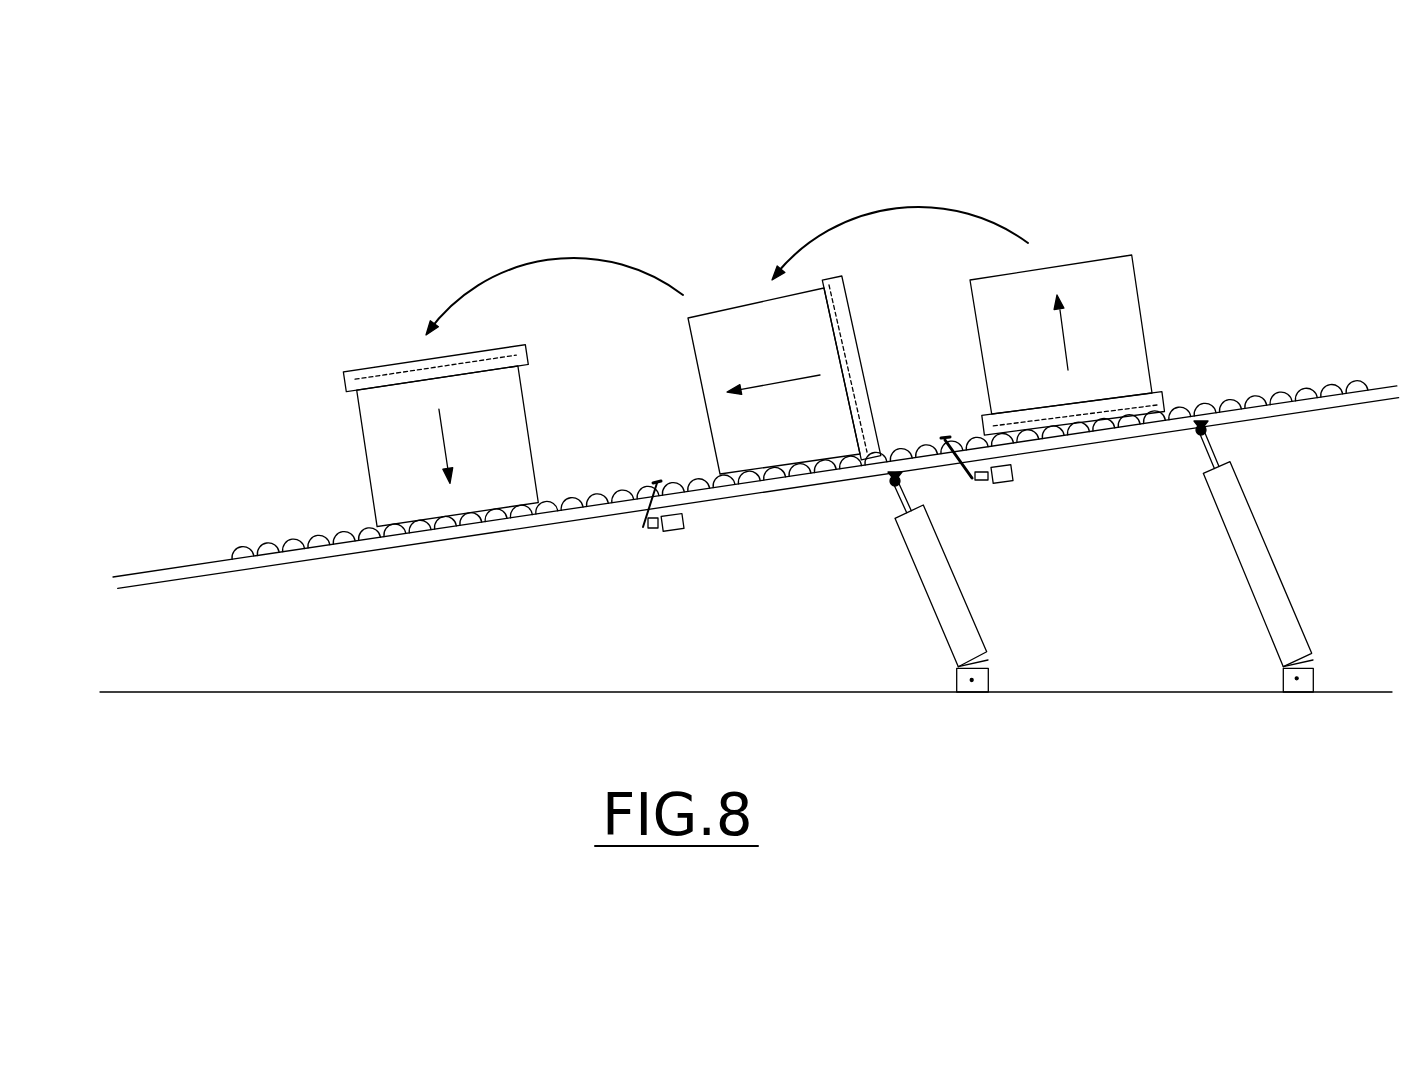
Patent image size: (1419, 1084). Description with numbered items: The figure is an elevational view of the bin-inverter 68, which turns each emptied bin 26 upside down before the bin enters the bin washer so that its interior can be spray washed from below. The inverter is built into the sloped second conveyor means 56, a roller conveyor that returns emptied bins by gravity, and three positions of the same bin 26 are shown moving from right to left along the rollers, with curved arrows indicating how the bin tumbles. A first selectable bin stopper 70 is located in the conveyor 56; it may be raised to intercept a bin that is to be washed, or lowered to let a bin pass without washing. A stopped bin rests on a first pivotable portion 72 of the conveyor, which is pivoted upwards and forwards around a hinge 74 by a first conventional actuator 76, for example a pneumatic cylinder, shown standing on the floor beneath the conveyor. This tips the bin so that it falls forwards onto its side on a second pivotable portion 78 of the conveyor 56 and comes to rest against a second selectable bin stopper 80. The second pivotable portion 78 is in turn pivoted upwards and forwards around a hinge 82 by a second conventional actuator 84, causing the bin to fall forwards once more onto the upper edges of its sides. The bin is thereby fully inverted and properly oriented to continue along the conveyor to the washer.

The bin-inverter 68 is at (1001, 103).
The bin 26 is at (524, 393).
The second conveyor means 56 is at (1377, 383).
The hinge 74 is at (917, 456).
The first selectable bin stopper 70 is at (957, 413).
The second selectable bin stopper 80 is at (657, 482).
The hinge 82 is at (597, 513).
The second pivotable portion 78 is at (824, 482).
The first pivotable portion 72 is at (1120, 438).
The second conventional actuator 84 is at (928, 592).
The first conventional actuator 76 is at (1265, 567).